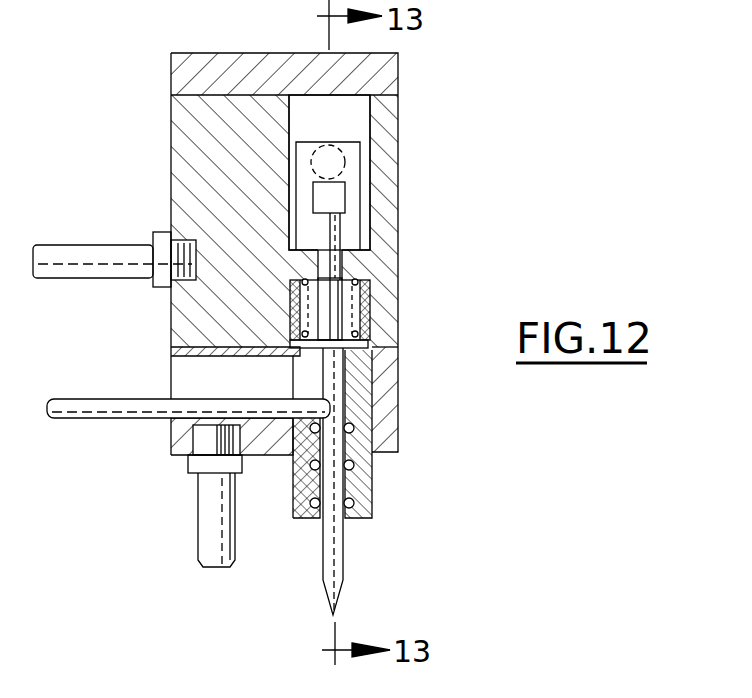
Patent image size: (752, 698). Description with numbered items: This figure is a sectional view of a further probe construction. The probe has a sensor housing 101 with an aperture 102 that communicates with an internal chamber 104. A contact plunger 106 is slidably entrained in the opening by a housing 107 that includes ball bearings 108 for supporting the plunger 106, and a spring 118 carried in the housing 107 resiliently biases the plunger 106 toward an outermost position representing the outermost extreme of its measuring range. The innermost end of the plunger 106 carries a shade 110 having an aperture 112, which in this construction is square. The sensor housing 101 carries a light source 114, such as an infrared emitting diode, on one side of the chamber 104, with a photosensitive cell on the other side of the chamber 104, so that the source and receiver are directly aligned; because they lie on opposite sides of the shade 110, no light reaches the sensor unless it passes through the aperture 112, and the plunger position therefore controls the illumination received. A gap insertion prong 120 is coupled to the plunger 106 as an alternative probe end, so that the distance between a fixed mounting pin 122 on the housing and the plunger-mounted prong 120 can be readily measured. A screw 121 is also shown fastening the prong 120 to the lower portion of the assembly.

The sensor housing 101 is at (177, 426).
The aperture 102 is at (290, 466).
The internal chamber 104 is at (350, 122).
The contact plunger 106 is at (343, 573).
The housing 107 is at (375, 490).
The ball bearings 108 is at (296, 516).
The shade 110 is at (355, 168).
The aperture 112 is at (340, 200).
The light source 114 is at (405, 132).
The spring 118 is at (375, 305).
The gap insertion prong 120 is at (73, 399).
The screw 121 is at (202, 513).
The fixed mounting pin 122 is at (86, 245).